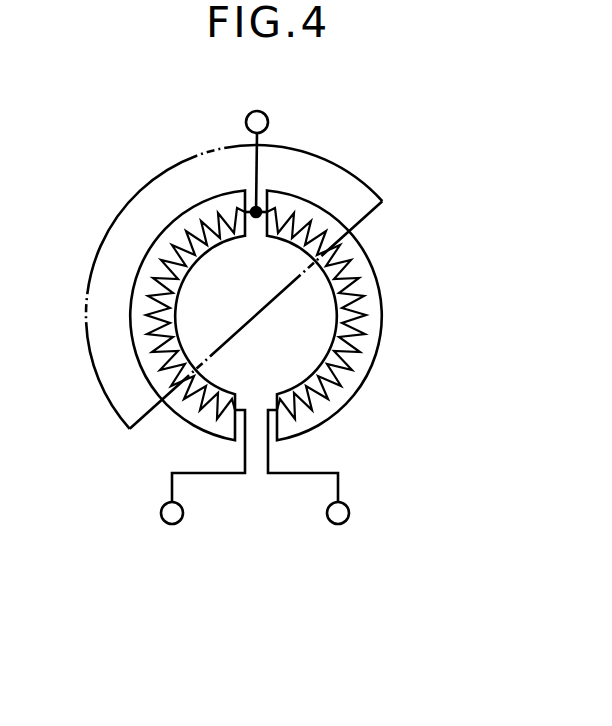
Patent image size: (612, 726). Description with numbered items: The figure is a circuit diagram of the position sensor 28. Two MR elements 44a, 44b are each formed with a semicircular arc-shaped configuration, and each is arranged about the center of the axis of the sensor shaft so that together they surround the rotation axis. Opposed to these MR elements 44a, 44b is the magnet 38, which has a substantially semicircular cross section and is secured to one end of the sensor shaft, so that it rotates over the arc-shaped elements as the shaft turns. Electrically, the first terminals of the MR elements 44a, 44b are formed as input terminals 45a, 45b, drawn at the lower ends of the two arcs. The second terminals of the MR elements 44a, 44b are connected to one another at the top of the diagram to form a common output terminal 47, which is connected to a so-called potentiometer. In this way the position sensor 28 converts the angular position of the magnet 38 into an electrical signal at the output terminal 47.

The position sensor 28 is at (348, 114).
The magnet 38 is at (138, 192).
The MR element 44a is at (422, 417).
The MR element 44b is at (83, 403).
The input terminal 45a is at (336, 552).
The input terminal 45b is at (168, 552).
The output terminal 47 is at (254, 111).